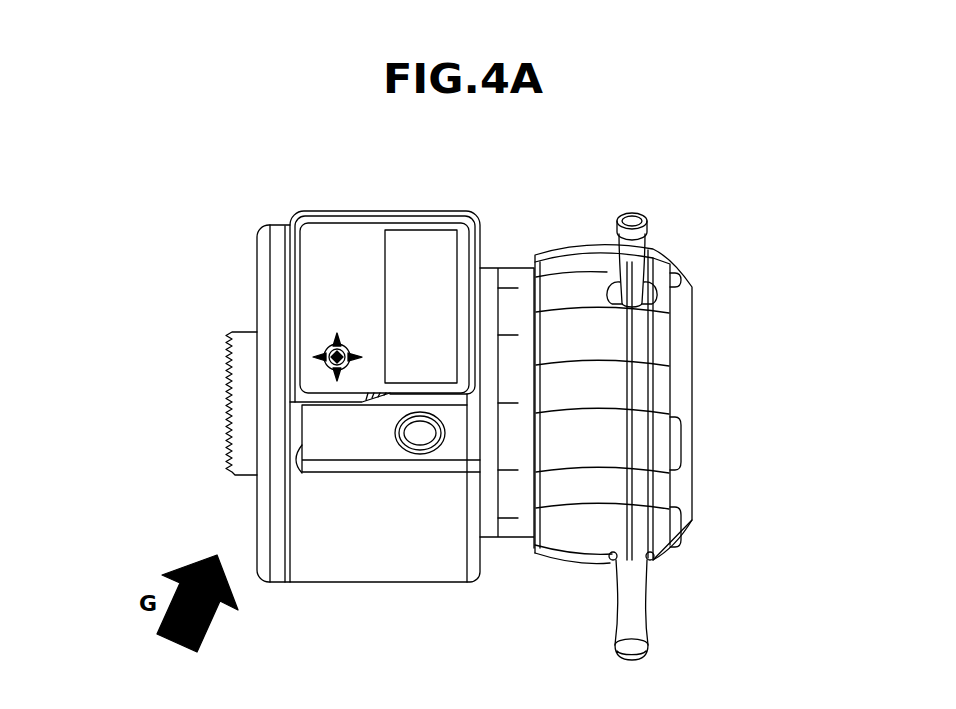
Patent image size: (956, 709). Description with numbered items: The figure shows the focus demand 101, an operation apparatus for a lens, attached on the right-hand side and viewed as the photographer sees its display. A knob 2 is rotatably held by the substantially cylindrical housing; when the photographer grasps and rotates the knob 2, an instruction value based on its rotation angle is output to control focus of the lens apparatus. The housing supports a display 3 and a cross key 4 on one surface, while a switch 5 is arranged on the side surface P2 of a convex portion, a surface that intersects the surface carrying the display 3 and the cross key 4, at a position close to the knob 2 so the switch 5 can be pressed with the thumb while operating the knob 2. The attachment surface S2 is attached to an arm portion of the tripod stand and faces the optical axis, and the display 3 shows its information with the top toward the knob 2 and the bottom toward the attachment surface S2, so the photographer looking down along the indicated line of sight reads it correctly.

The focus demand 101 is at (461, 399).
The knob 2 is at (680, 403).
The display 3 is at (402, 250).
The cross key 4 is at (336, 344).
The switch 5 is at (418, 437).
The attachment surface S2 is at (257, 263).
The side surface P2 is at (328, 428).